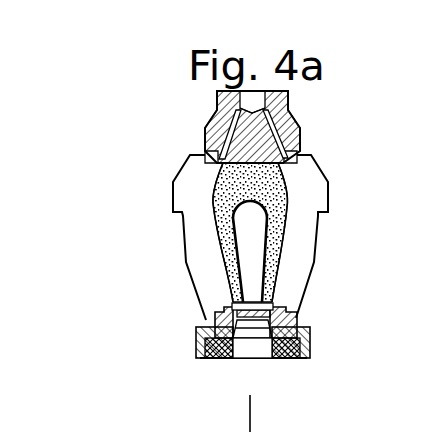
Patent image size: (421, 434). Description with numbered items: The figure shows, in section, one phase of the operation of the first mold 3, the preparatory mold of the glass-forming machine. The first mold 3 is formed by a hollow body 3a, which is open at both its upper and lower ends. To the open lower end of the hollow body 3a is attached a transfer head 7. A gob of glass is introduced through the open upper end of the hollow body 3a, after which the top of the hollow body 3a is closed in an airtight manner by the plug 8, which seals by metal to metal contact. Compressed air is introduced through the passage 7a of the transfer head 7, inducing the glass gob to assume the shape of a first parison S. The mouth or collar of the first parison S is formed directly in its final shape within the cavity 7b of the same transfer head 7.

The first mold 3 is at (241, 261).
The hollow body 3a is at (323, 246).
The plug 8 is at (205, 124).
The first parison S is at (216, 204).
The transfer head 7 is at (262, 353).
The passage 7a is at (258, 348).
The cavity 7b is at (248, 315).